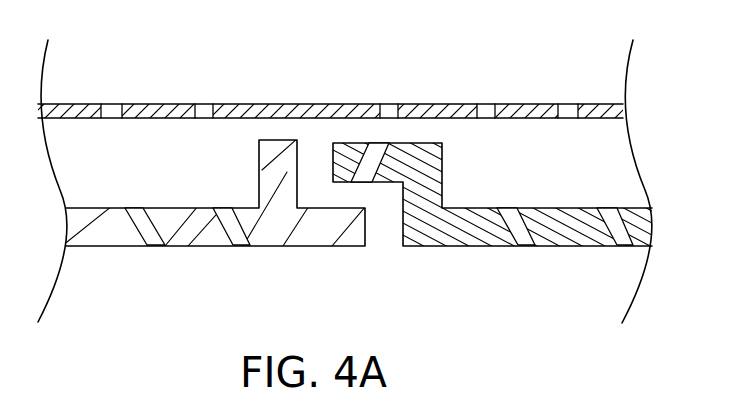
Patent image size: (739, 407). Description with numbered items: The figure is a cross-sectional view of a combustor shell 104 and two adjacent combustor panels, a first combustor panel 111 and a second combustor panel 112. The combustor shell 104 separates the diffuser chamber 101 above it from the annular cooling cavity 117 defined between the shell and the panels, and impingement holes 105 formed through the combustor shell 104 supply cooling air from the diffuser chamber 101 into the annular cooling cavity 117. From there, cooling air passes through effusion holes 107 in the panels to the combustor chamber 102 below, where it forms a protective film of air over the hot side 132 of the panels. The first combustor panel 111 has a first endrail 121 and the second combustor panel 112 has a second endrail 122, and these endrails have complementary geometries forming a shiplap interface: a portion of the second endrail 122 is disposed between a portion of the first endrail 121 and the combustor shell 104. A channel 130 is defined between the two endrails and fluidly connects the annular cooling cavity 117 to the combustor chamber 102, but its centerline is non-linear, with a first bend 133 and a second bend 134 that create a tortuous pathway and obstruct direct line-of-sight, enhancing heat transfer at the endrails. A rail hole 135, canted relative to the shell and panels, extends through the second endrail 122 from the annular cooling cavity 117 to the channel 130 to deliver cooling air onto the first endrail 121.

The diffuser chamber 101 is at (276, 38).
The combustor chamber 102 is at (298, 338).
The combustor shell 104 is at (62, 106).
The impingement holes 105 is at (111, 106).
The effusion holes 107 is at (150, 240).
The first combustor panel 111 is at (118, 284).
The second combustor panel 112 is at (575, 284).
The annular cooling cavity 117 is at (186, 178).
The first endrail 121 is at (322, 225).
The second endrail 122 is at (428, 210).
The channel 130 is at (315, 131).
The hot side 132 is at (448, 245).
The first bend 133 is at (317, 197).
The second bend 134 is at (384, 197).
The rail hole 135 is at (373, 157).